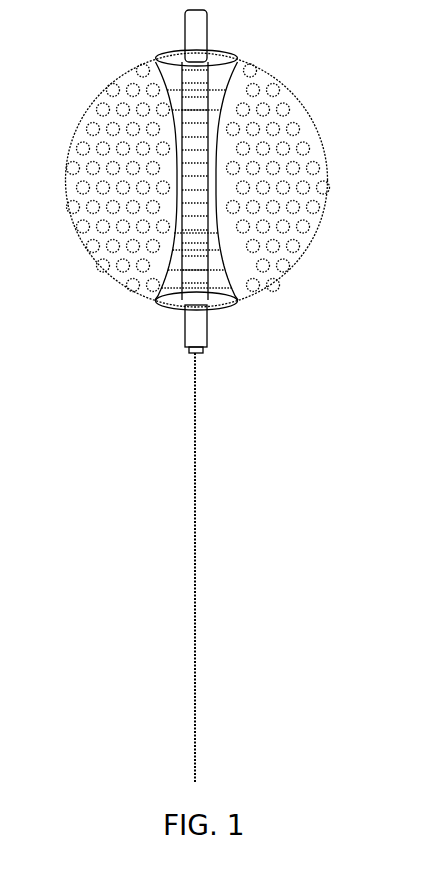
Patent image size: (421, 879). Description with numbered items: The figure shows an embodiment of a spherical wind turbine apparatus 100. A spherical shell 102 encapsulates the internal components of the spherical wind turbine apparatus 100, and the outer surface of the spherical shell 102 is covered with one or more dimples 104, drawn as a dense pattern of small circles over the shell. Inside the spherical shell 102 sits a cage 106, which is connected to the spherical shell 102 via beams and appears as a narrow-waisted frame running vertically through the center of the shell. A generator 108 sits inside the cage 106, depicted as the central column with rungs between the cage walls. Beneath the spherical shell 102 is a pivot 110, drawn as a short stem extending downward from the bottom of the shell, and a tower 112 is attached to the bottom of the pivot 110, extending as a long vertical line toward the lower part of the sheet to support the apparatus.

The spherical wind turbine apparatus 100 is at (91, 80).
The spherical shell 102 is at (328, 177).
The dimples 104 is at (297, 128).
The cage 106 is at (223, 97).
The generator 108 is at (195, 212).
The pivot 110 is at (207, 322).
The tower 112 is at (196, 482).